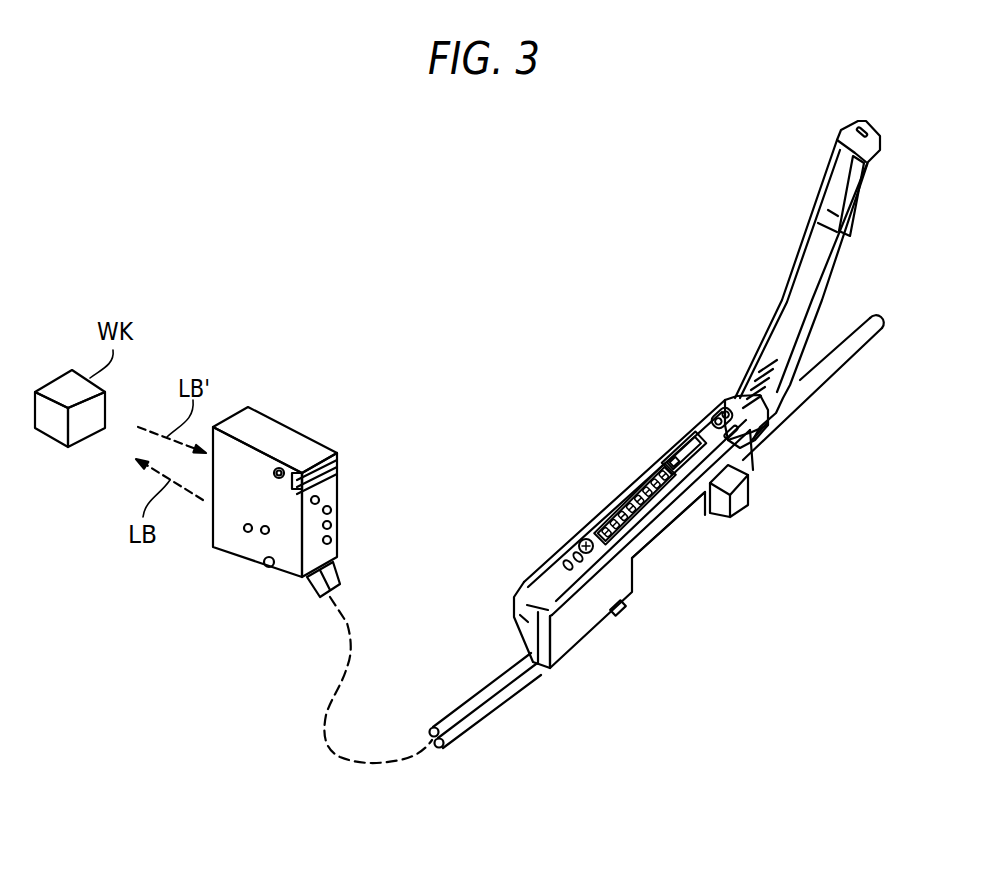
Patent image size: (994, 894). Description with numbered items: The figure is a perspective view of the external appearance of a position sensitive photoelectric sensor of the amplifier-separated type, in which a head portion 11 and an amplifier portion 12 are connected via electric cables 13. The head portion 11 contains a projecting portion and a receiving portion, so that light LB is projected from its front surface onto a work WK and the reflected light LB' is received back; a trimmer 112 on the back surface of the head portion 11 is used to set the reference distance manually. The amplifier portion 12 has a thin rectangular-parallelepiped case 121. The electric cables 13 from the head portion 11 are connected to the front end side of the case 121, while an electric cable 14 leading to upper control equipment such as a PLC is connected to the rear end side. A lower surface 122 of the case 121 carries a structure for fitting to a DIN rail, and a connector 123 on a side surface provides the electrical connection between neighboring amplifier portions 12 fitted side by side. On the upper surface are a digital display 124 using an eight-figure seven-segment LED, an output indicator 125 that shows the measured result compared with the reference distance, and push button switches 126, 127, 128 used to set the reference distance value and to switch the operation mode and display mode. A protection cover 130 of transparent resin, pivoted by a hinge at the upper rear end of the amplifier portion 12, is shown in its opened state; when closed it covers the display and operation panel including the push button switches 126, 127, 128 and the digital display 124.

The head portion 11 is at (278, 418).
The trimmer 112 is at (320, 492).
The amplifier portion 12 is at (605, 380).
The case 121 is at (593, 623).
The lower surface 122 is at (665, 560).
The connector 123 is at (723, 505).
The digital display 124 is at (630, 493).
The output indicator 125 is at (570, 557).
The push button switch 126 is at (583, 537).
The push button switch 127 is at (723, 402).
The push button switch 128 is at (683, 438).
The electric cables 13 is at (483, 673).
The electric cable 14 is at (833, 375).
The protection cover 130 is at (878, 158).